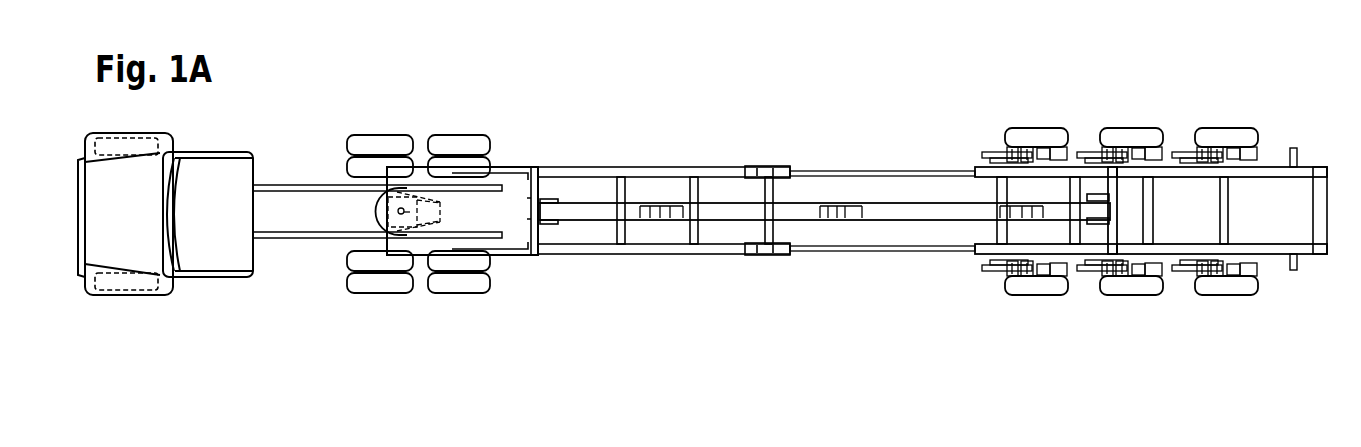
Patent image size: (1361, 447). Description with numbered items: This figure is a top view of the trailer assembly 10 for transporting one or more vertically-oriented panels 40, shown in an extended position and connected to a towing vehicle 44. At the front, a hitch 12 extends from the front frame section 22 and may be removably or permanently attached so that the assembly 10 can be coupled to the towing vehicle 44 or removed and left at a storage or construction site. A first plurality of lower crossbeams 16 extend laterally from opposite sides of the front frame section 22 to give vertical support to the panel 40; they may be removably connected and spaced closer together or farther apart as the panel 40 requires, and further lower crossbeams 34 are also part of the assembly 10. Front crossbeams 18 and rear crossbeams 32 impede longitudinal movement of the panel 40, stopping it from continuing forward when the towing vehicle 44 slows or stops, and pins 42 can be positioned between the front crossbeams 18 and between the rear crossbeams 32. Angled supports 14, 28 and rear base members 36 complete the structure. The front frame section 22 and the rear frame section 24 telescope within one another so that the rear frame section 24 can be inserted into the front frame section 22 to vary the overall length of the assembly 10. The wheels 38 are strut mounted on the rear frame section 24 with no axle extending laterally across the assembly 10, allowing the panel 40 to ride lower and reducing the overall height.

The trailer assembly 10 is at (416, 95).
The hitch 12 is at (422, 250).
The angled support 14 is at (518, 250).
The lower crossbeam 16 is at (627, 190).
The front crossbeam 18 is at (510, 182).
The front frame section 22 is at (700, 167).
The rear frame section 24 is at (875, 168).
The angled support 28 is at (1063, 177).
The rear crossbeam 32 is at (1117, 235).
The lower crossbeam 34 is at (997, 223).
The rear base member 36 is at (1273, 167).
The wheel 38 is at (1135, 128).
The panel 40 is at (808, 202).
The pin 42 is at (1093, 190).
The towing vehicle 44 is at (218, 150).